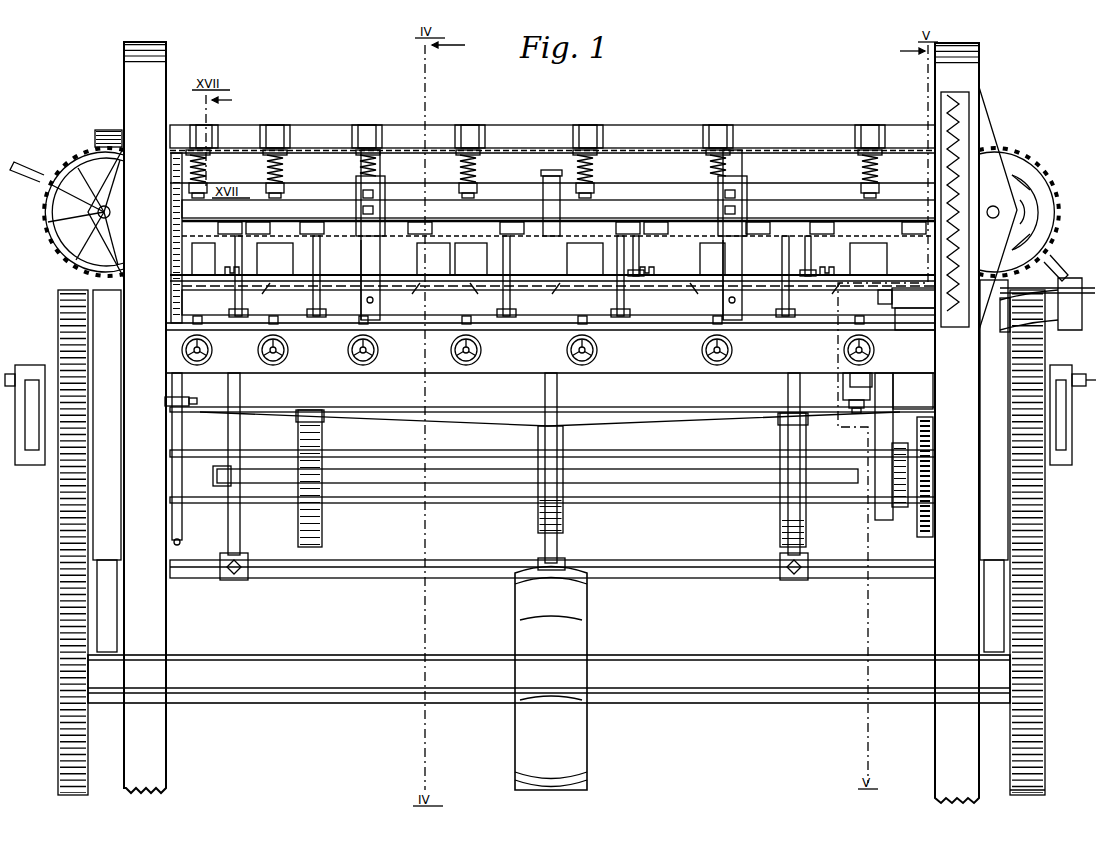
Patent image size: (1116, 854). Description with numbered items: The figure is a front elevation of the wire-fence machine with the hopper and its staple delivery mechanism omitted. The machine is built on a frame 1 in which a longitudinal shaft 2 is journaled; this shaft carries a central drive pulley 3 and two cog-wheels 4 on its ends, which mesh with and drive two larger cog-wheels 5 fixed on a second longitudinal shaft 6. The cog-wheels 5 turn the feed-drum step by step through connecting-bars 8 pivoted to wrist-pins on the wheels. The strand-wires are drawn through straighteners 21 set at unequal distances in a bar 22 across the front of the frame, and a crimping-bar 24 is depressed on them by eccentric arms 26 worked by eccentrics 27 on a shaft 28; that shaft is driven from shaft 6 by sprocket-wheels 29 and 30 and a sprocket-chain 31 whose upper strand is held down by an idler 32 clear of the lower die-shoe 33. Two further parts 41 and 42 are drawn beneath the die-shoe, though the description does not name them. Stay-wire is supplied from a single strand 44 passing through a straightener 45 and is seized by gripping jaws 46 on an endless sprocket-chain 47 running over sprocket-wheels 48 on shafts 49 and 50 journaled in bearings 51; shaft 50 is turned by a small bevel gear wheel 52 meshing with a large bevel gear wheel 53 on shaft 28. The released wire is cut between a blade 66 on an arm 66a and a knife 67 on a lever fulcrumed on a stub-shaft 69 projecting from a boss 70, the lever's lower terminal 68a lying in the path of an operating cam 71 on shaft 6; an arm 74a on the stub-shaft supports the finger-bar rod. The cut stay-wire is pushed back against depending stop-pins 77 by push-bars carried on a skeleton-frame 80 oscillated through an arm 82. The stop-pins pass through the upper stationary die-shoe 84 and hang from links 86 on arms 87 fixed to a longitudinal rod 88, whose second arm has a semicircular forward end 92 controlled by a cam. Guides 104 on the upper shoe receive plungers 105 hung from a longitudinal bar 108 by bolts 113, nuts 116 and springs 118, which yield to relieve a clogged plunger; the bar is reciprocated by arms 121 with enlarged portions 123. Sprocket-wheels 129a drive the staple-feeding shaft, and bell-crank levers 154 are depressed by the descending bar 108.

The frame 1 is at (551, 422).
The longitudinal shaft 2 is at (478, 657).
The central drive pulley 3 is at (551, 679).
The cog-wheel 4 is at (1012, 770).
The larger cog-wheel 5 is at (58, 300).
The longitudinal shaft 6 is at (447, 468).
The connecting-bar 8 is at (25, 420).
The straightener 21 is at (213, 350).
The bar 22 is at (292, 350).
The crimping-bar 24 is at (550, 348).
The eccentric arm 26 is at (360, 262).
The eccentric 27 is at (382, 182).
The shaft 28 is at (640, 208).
The sprocket-wheel 29 is at (179, 544).
The sprocket-wheel 30 is at (172, 160).
The sprocket-chain 31 is at (182, 434).
The idler 32 is at (186, 395).
The lower die-shoe 33 is at (552, 395).
The arm 41 is at (322, 416).
The gear 42 is at (324, 526).
The stay-wire strand 44 is at (1080, 275).
The straightener 45 is at (1072, 320).
The gripping jaws 46 is at (34, 180).
The endless sprocket-chain 47 is at (655, 151).
The sprocket-wheel 48 is at (78, 160).
The shaft 49 is at (104, 206).
The shaft 50 is at (993, 206).
The bearing 51 is at (552, 208).
The small bevel gear wheel 52 is at (1032, 200).
The large bevel gear wheel 53 is at (960, 130).
The blade 66 is at (878, 296).
The arm 66a is at (881, 359).
The knife 67 is at (915, 319).
The lower terminal of lever 68a is at (898, 508).
The stub-shaft 69 is at (843, 386).
The boss 70 is at (913, 391).
The operating cam 71 is at (875, 505).
The arm 74a is at (852, 375).
The stop-pin 77 is at (558, 299).
The skeleton-frame 80 is at (240, 522).
The arm 82 is at (538, 520).
The upper stationary die-shoe 84 is at (558, 299).
The link 86 is at (818, 268).
The arm 87 is at (640, 248).
The longitudinal rod 88 is at (537, 236).
The semicircular forward end 92 is at (549, 195).
The guide 104 is at (702, 252).
The plunger 105 is at (275, 250).
The longitudinal bar 108 is at (518, 136).
The bolt 113 is at (272, 136).
The nut 116 is at (285, 189).
The spring 118 is at (280, 168).
The arm 121 is at (106, 128).
The enlarged portion of arm 123 is at (551, 420).
The sprocket-wheel 129a is at (922, 537).
The bell-crank lever 154 is at (242, 303).